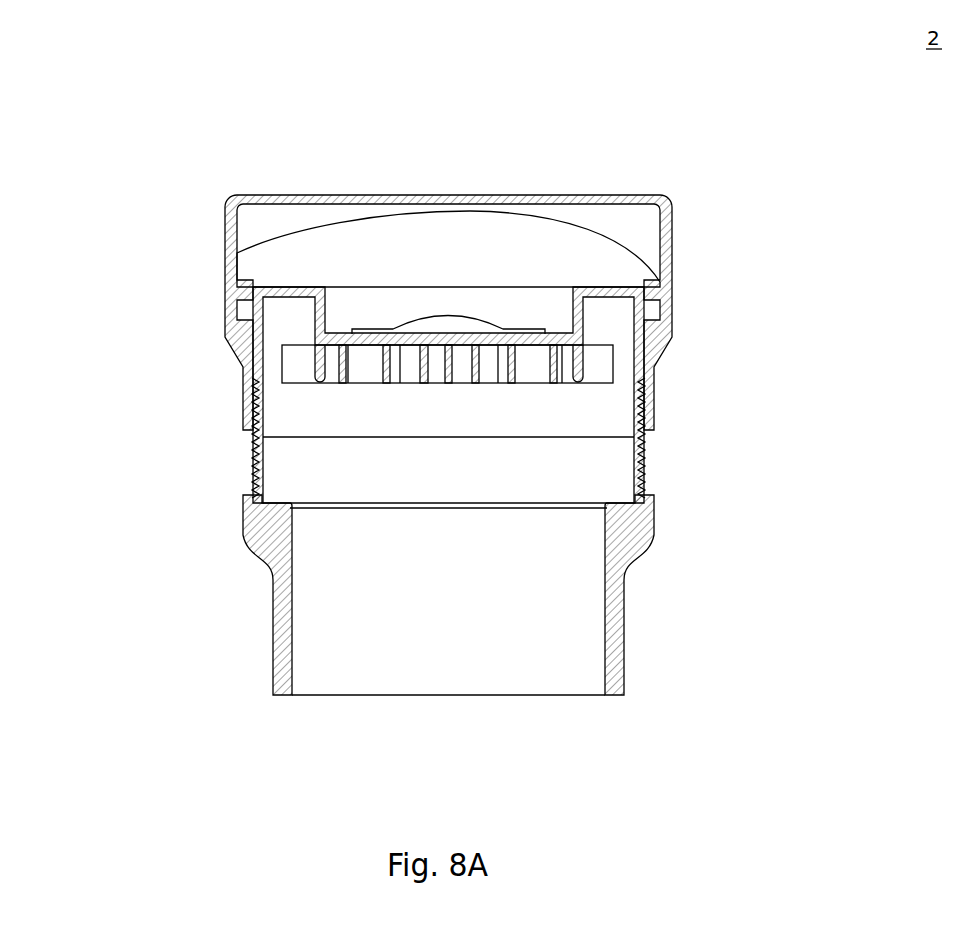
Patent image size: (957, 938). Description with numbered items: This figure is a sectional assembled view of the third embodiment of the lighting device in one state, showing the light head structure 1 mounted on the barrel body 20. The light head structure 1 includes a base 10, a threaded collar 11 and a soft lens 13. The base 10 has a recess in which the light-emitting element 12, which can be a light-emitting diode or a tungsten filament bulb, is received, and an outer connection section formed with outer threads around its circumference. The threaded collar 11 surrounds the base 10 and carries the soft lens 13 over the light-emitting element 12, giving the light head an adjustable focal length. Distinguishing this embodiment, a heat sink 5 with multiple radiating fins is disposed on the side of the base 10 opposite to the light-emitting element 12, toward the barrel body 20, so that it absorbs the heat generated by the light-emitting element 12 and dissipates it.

The light head structure 1 is at (460, 406).
The heat sink 5 is at (305, 372).
The base 10 is at (256, 286).
The threaded collar 11 is at (666, 196).
The light-emitting element 12 is at (462, 322).
The soft lens 13 is at (350, 220).
The barrel body 20 is at (627, 641).